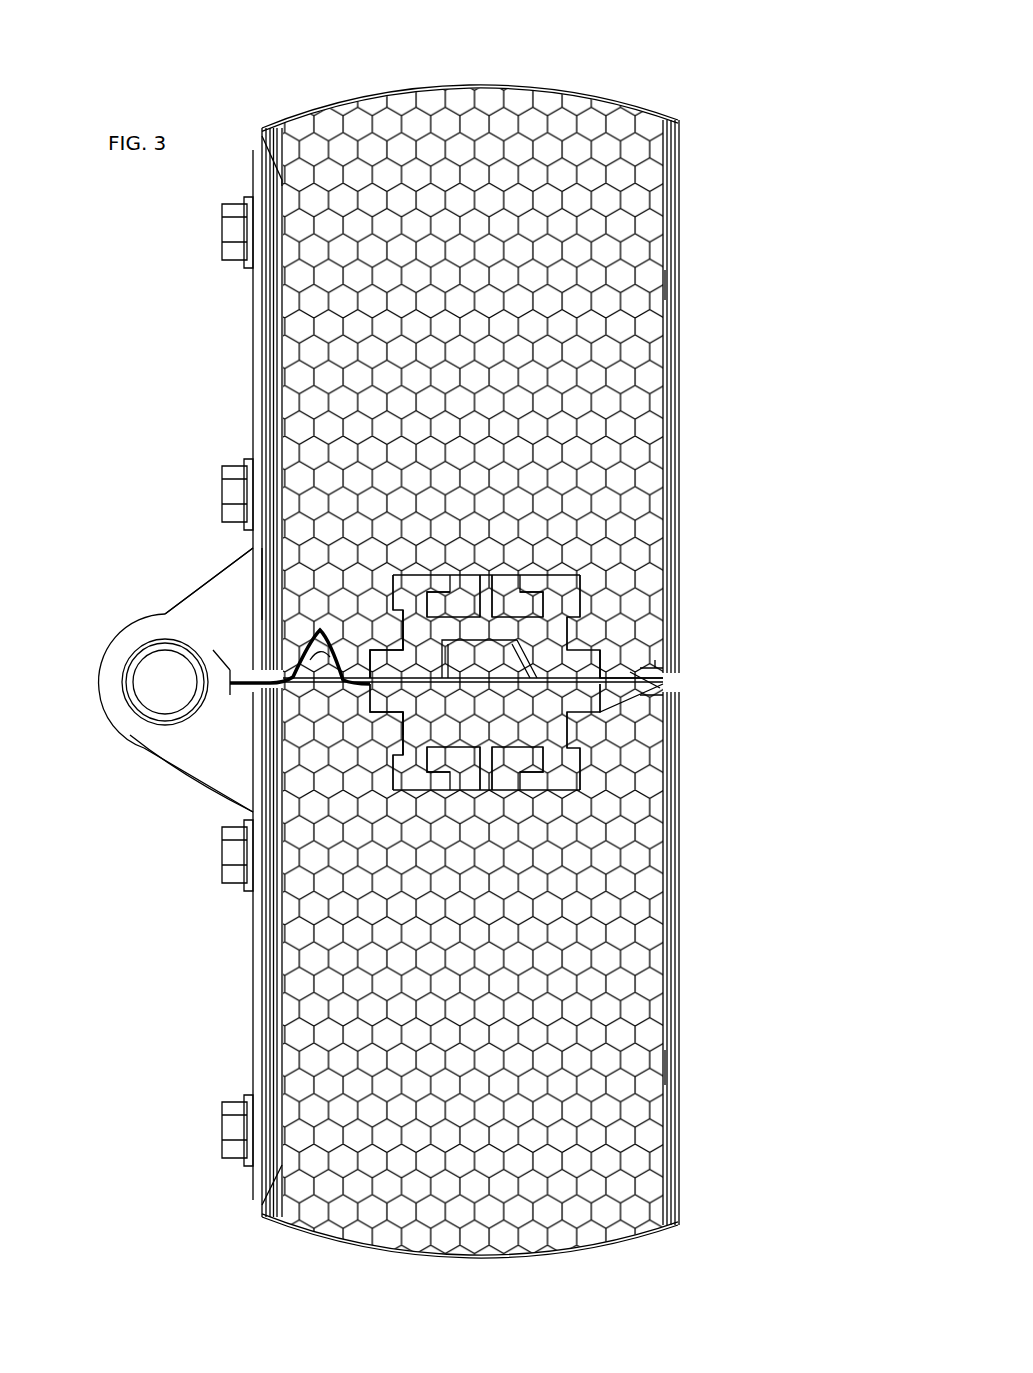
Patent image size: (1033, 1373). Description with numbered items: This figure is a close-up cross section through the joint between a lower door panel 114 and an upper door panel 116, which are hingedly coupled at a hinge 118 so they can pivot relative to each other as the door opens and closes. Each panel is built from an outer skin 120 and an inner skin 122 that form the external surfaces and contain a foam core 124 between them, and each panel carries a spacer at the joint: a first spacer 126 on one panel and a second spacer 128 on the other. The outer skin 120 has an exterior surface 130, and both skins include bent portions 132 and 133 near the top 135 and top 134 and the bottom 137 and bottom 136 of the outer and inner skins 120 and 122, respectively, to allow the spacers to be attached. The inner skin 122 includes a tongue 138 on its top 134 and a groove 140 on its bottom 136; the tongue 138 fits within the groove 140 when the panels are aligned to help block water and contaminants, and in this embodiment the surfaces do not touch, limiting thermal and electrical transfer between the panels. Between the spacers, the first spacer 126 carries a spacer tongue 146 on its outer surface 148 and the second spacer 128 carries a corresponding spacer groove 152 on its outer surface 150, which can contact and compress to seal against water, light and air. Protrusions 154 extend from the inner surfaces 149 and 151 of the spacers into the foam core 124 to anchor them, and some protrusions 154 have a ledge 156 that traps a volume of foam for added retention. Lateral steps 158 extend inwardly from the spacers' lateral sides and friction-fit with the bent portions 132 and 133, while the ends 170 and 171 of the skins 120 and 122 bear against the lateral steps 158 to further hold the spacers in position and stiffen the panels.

The lower door panel 114 is at (672, 1062).
The upper door panel 116 is at (672, 512).
The hinge 118 is at (98, 686).
The outer skin 120 is at (672, 428).
The inner skin 122 is at (274, 352).
The foam core 124 is at (578, 104).
The first spacer 126 is at (574, 795).
The second spacer 128 is at (602, 576).
The exterior surface 130 is at (672, 340).
The bent portion 132 is at (632, 720).
The bent portion 133 is at (384, 628).
The top 134 is at (172, 758).
The top 135 is at (662, 672).
The bottom 136 is at (342, 690).
The bottom 137 is at (642, 690).
The tongue 138 is at (260, 640).
The groove 140 is at (306, 624).
The spacer tongue 146 is at (448, 680).
The outer surface 148 is at (604, 662).
The inner surface 149 is at (488, 784).
The outer surface 150 is at (604, 702).
The inner surface 151 is at (488, 582).
The spacer groove 152 is at (526, 680).
The protrusions 154 is at (402, 574).
The ledge 156 is at (446, 598).
The lateral steps 158 is at (404, 628).
The end 170 is at (584, 592).
The end 171 is at (400, 604).